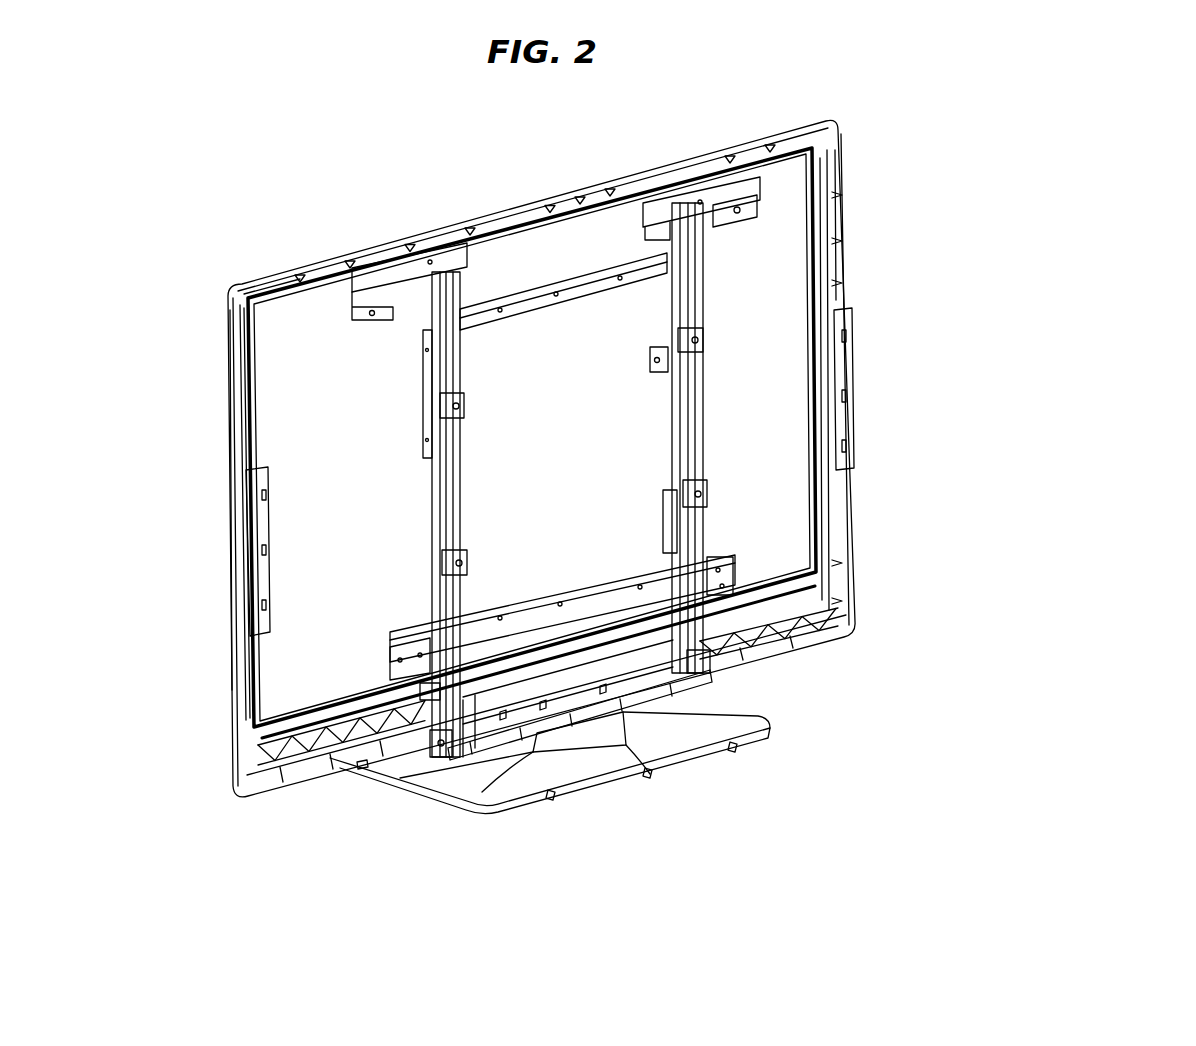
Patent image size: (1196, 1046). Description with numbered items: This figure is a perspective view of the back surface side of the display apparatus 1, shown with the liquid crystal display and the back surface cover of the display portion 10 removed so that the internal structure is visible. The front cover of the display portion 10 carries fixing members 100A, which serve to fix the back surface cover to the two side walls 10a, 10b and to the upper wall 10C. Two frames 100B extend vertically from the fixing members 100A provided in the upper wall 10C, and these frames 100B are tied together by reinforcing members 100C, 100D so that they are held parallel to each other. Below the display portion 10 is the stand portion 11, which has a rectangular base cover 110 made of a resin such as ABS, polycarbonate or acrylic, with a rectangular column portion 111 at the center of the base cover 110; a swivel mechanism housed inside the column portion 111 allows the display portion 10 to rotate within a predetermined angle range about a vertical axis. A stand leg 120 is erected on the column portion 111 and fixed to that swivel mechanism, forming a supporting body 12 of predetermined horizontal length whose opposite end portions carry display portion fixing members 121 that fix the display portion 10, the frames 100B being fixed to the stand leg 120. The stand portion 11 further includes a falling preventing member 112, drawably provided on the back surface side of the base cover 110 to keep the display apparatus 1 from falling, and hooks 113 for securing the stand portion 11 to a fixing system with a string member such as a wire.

The display apparatus 1 is at (858, 168).
The display portion 10 is at (481, 210).
The side wall 10a is at (230, 392).
The side wall 10b is at (846, 241).
The upper wall 10C is at (274, 282).
The fixing member 100A is at (666, 186).
The frame 100B is at (700, 410).
The reinforcing member 100C is at (557, 298).
The reinforcing member 100D is at (566, 595).
The stand portion 11 is at (523, 815).
The base cover 110 is at (388, 768).
The column portion 111 is at (530, 750).
The falling preventing member 112 is at (652, 774).
The hook 113 is at (737, 748).
The supporting body 12 is at (708, 687).
The stand leg 120 is at (441, 752).
The display portion fixing member 121 is at (420, 700).